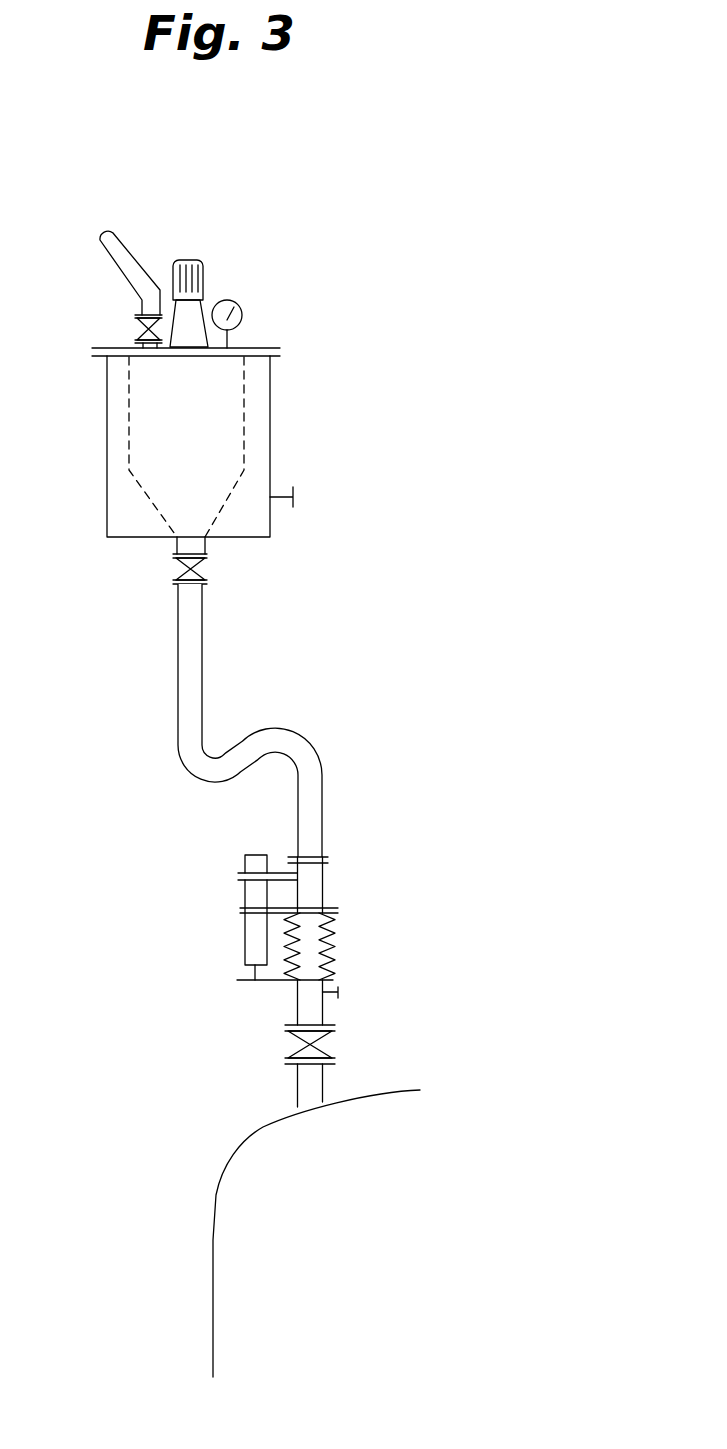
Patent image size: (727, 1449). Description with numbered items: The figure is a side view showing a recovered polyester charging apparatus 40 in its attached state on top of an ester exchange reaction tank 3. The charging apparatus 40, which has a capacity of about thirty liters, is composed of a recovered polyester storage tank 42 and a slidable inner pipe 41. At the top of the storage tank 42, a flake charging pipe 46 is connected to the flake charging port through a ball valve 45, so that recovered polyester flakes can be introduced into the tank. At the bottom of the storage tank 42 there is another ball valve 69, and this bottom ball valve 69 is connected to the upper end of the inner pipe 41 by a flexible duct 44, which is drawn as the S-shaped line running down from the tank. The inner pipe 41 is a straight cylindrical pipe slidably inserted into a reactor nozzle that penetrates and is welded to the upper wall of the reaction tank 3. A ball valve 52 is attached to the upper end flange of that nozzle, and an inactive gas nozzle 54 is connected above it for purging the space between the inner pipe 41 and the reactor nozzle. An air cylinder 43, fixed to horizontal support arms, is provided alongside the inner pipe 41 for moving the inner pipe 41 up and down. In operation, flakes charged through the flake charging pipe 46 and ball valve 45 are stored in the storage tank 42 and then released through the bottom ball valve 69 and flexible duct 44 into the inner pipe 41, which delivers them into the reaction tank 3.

The ester exchange reaction tank 3 is at (238, 1237).
The recovered polyester charging apparatus 40 is at (380, 639).
The inner pipe 41 is at (315, 880).
The recovered polyester storage tank 42 is at (272, 398).
The air cylinder 43 is at (252, 940).
The flexible duct 44 is at (193, 683).
The ball valve 45 is at (137, 326).
The flake charging pipe 46 is at (130, 268).
The ball valve 52 is at (292, 1040).
The inactive gas nozzle 54 is at (340, 993).
The ball valve 69 is at (203, 566).